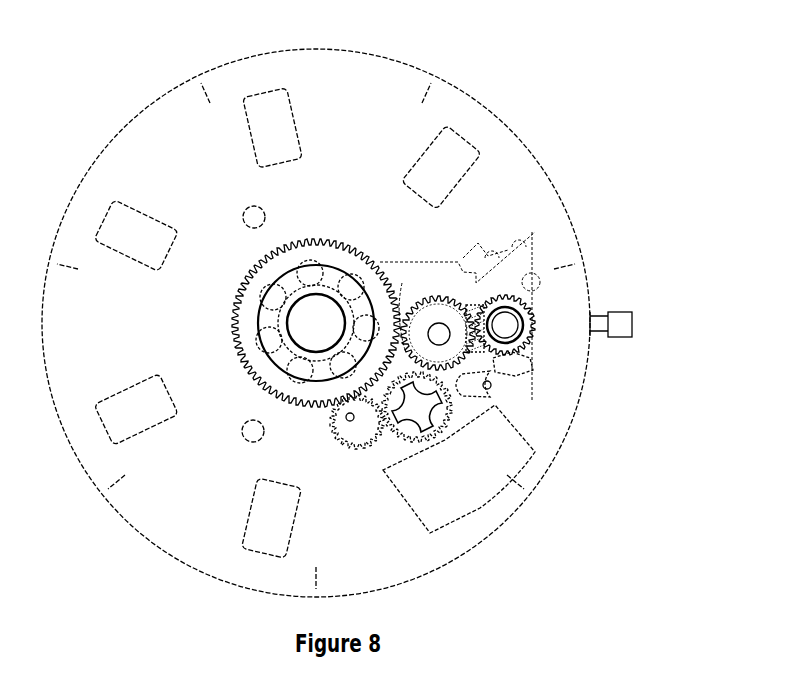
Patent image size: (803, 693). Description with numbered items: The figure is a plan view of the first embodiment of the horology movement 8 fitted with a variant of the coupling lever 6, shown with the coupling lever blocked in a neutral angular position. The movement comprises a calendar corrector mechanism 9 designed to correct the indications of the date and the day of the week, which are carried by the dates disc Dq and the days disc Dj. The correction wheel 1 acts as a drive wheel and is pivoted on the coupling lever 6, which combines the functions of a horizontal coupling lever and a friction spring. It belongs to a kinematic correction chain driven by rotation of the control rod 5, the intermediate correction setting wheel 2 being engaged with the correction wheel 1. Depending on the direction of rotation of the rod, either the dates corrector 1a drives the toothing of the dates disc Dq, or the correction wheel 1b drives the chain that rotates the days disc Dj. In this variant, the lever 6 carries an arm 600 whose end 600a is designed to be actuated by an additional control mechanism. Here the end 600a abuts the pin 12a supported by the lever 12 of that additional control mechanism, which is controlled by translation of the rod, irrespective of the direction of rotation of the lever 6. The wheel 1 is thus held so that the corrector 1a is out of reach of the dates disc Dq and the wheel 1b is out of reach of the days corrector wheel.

The horology movement 8 is at (540, 153).
The days disc Dj is at (208, 125).
The dates disc Dq is at (459, 502).
The coupling lever 6 is at (426, 307).
The intermediate correction setting wheel 2 is at (445, 316).
The calendar corrector mechanism 9 is at (537, 322).
The control rod 5 is at (628, 322).
The arm 600 is at (477, 367).
The end of the arm 600a is at (491, 384).
The pin 12a is at (493, 378).
The lever of the additional control mechanism 12 is at (488, 397).
The correction wheel 1 is at (382, 430).
The dates corrector 1a is at (405, 395).
The correction wheel for the days 1b is at (405, 432).